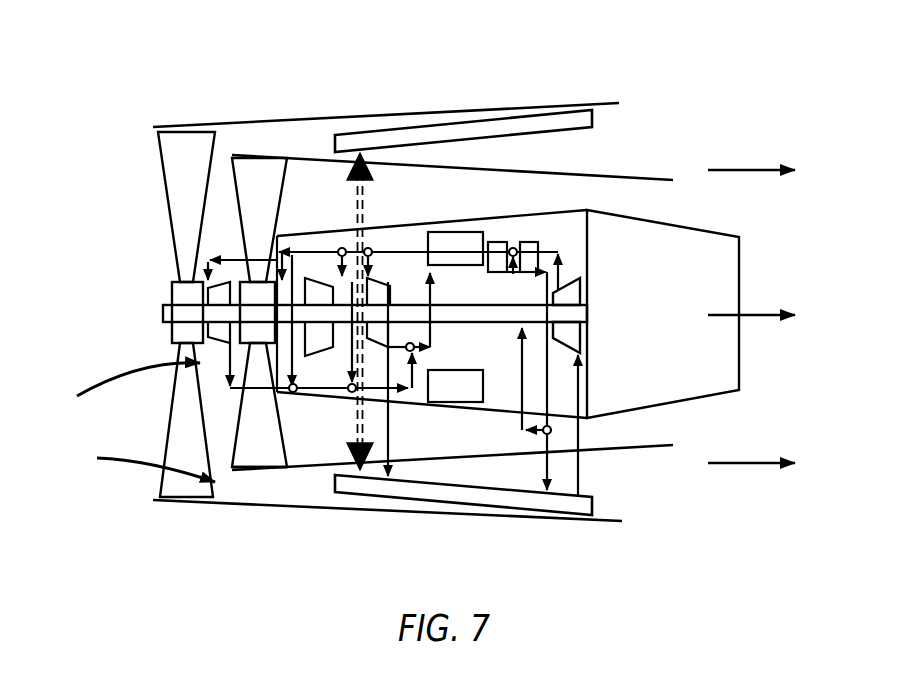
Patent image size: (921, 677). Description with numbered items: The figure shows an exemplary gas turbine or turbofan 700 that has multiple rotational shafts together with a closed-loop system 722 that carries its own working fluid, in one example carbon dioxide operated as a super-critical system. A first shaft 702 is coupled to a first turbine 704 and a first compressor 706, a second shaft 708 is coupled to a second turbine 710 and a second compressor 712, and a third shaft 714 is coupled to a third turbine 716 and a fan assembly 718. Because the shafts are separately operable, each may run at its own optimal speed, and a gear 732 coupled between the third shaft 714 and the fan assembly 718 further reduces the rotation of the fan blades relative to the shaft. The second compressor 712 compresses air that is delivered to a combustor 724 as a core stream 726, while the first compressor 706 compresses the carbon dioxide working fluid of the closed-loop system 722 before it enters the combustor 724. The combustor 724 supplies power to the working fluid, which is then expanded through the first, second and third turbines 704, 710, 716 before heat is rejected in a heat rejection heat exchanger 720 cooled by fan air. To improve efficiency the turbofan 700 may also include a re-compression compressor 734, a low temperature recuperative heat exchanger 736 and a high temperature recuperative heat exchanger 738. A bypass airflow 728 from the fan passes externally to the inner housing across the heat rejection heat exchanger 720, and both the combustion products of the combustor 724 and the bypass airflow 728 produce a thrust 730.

The turbofan 700 is at (623, 53).
The first shaft 702 is at (410, 303).
The first turbine 704 is at (392, 330).
The first compressor 706 is at (573, 282).
The second shaft 708 is at (307, 358).
The second turbine 710 is at (338, 335).
The second compressor 712 is at (323, 250).
The third shaft 714 is at (205, 262).
The third turbine 716 is at (230, 470).
The fan assembly 718 is at (245, 146).
The heat rejection heat exchanger 720 is at (538, 506).
The closed-loop system 722 is at (428, 70).
The combustor 724 is at (450, 393).
The core stream 726 is at (80, 385).
The bypass airflow 728 is at (97, 460).
The thrust 730 is at (757, 168).
The gear 732 is at (180, 168).
The re-compression compressor 734 is at (520, 328).
The low temperature recuperative heat exchanger 736 is at (497, 240).
The high temperature recuperative heat exchanger 738 is at (530, 240).